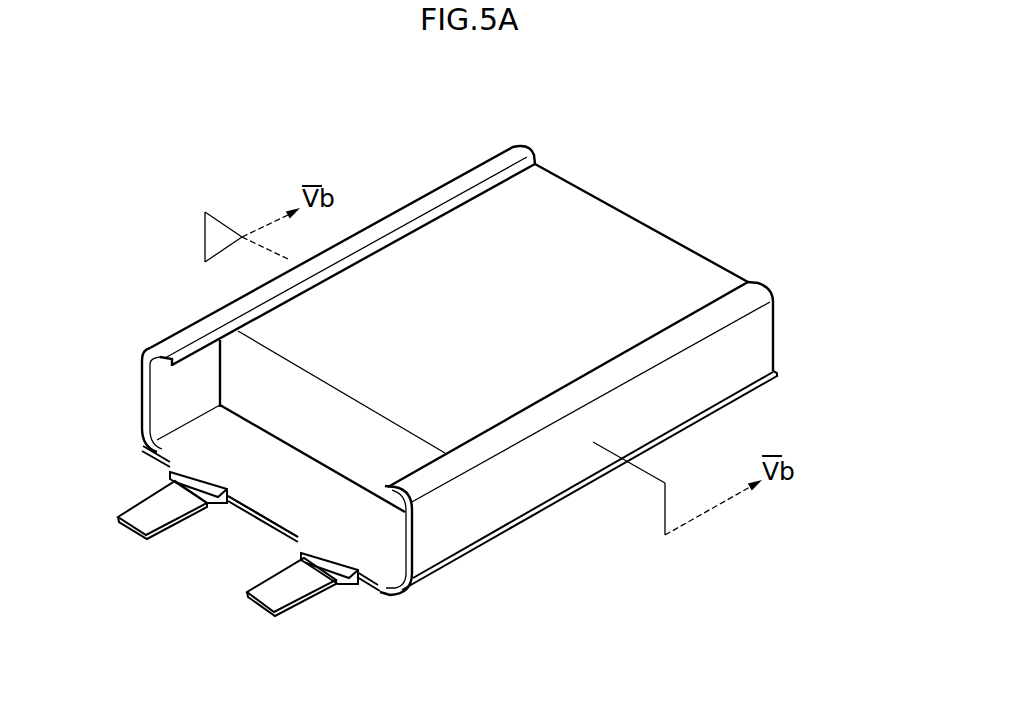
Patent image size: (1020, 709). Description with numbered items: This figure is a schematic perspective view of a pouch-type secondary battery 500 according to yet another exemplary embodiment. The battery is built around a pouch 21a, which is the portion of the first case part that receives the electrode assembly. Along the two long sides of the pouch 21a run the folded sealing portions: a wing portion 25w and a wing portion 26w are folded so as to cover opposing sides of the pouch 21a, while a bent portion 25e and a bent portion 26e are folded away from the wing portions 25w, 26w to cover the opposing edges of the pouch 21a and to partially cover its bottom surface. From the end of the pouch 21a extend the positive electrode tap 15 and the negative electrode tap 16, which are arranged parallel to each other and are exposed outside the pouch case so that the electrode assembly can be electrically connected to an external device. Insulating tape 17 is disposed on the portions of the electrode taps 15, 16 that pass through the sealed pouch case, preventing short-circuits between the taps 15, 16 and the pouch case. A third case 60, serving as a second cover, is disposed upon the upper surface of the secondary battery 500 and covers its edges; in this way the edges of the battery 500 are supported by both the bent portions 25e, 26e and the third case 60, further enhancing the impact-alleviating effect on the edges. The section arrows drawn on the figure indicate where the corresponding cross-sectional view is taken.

The pouch-type secondary battery 500 is at (93, 98).
The positive electrode tap 15 is at (142, 519).
The negative electrode tap 16 is at (270, 598).
The insulating tape 17 is at (285, 552).
The pouch 21a is at (612, 236).
The bent portion 25e is at (485, 173).
The wing portion 25w is at (143, 390).
The bent portion 26e is at (752, 296).
The wing portion 26w is at (765, 348).
The third case 60 is at (389, 597).